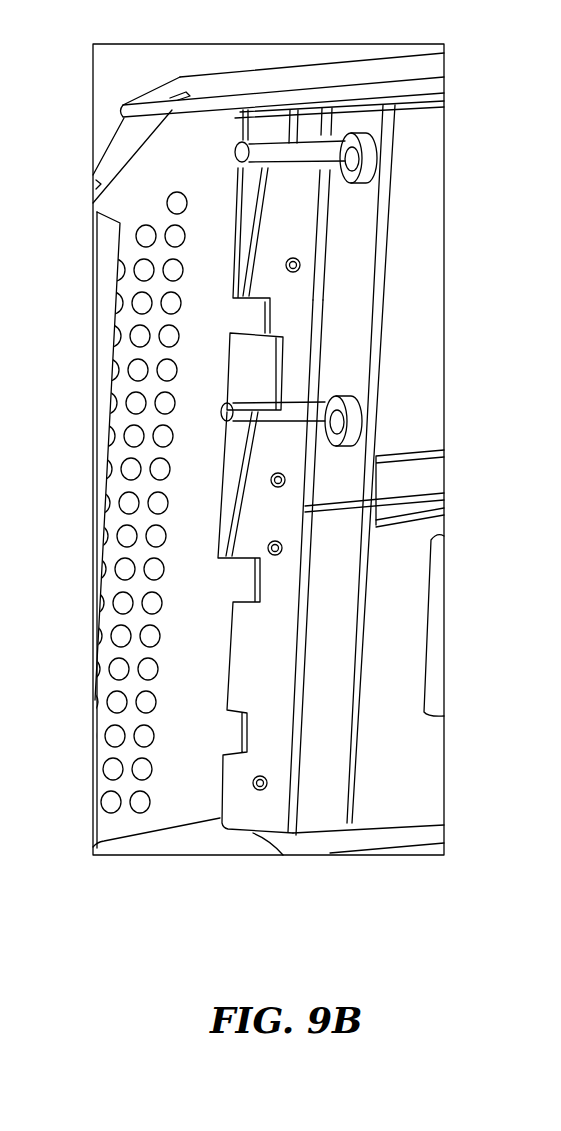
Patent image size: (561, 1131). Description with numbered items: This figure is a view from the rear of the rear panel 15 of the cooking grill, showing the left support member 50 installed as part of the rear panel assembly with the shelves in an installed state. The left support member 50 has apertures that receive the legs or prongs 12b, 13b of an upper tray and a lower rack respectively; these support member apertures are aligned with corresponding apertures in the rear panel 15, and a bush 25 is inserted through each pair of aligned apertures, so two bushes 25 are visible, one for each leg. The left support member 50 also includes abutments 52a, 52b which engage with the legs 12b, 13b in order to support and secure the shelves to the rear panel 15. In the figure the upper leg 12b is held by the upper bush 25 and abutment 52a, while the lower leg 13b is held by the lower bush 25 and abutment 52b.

The left support member 50 is at (197, 780).
The leg of upper tray 12b is at (322, 153).
The leg of lower rack 13b is at (303, 413).
The abutment 52a is at (248, 140).
The abutment 52b is at (267, 407).
The bush 25 is at (365, 180).
The rear panel 15 is at (410, 275).